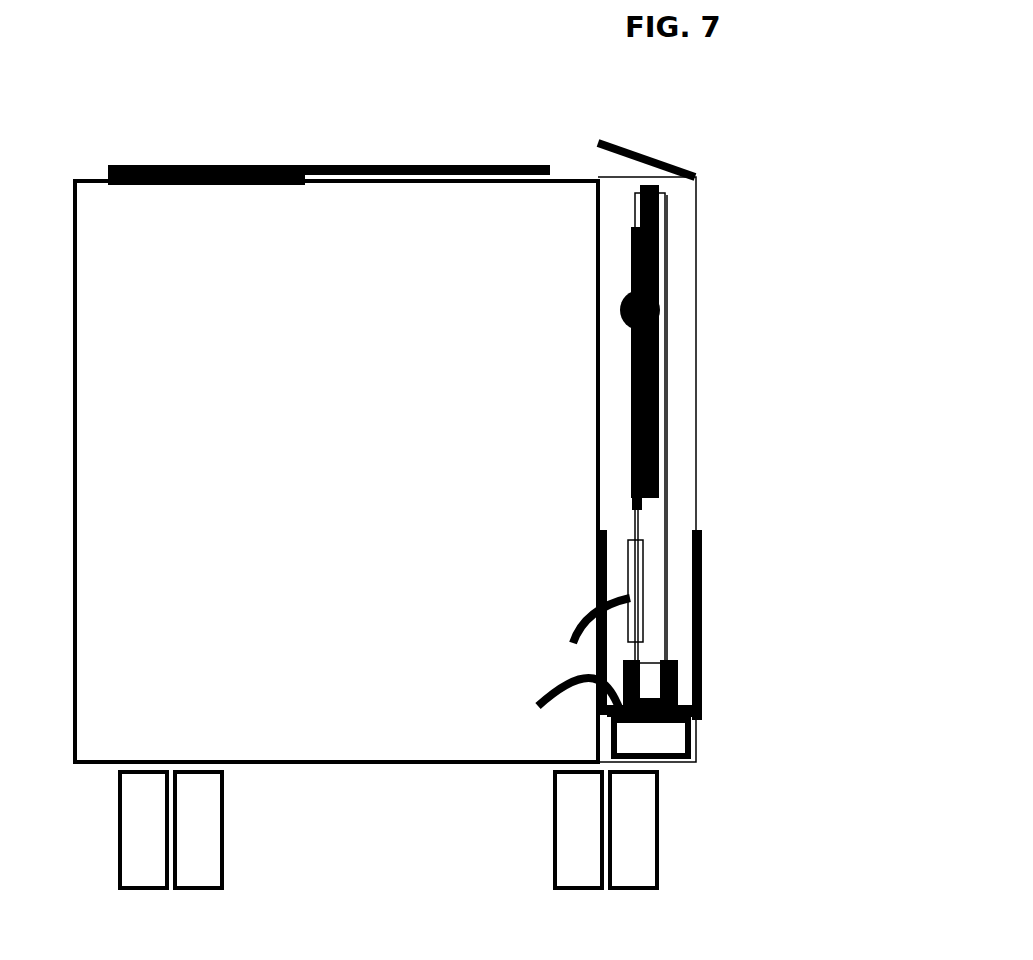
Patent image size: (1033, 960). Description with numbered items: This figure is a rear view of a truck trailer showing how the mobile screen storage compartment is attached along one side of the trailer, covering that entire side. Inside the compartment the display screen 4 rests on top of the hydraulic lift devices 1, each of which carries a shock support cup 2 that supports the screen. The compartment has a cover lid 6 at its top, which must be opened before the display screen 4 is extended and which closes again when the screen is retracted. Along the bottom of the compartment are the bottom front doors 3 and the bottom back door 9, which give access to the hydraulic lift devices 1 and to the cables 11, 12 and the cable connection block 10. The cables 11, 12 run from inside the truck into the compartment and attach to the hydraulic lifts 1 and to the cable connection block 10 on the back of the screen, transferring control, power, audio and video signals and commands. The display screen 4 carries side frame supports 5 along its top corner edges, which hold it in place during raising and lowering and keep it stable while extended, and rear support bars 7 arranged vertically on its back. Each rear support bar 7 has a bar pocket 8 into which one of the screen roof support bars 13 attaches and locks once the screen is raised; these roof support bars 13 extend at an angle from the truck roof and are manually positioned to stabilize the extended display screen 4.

The hydraulic lift device 1 is at (667, 733).
The shock support cup 2 is at (680, 681).
The bottom front door 3 is at (704, 582).
The display screen 4 is at (670, 502).
The side frame support 5 is at (660, 250).
The compartment cover lid 6 is at (654, 152).
The rear support bar 7 is at (630, 237).
The bar pocket 8 is at (621, 308).
The bottom back door 9 is at (596, 548).
The cable connection block 10 is at (626, 583).
The cable 11 is at (576, 627).
The cable 12 is at (552, 692).
The screen roof support bar 13 is at (207, 164).